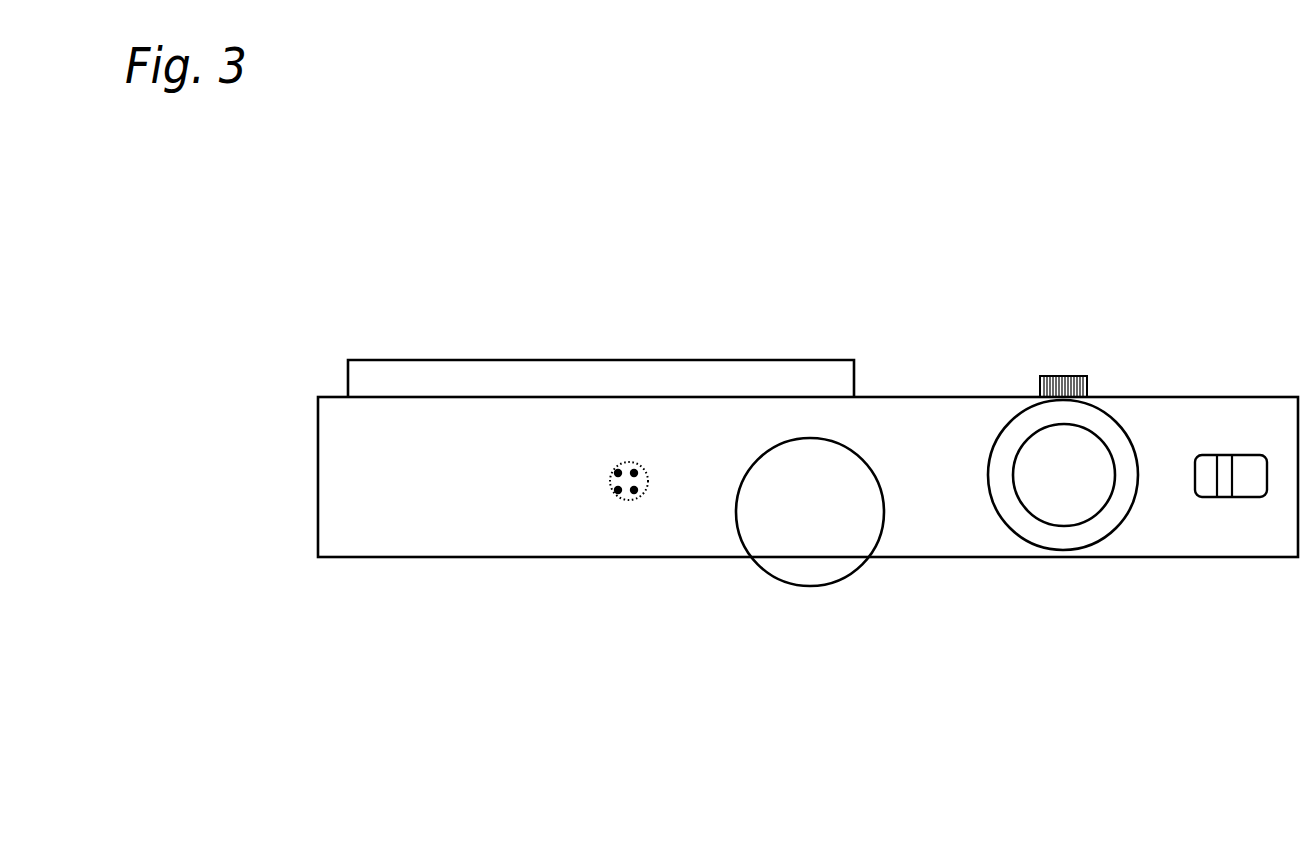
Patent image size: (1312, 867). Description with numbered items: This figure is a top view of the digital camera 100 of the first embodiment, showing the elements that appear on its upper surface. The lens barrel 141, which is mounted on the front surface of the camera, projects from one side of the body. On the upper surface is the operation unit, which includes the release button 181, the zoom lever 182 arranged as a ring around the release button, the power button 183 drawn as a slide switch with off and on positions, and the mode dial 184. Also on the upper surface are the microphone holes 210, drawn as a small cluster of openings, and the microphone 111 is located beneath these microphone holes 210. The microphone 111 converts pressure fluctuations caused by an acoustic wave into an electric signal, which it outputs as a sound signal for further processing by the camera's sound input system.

The digital camera 100 is at (696, 201).
The lens barrel 141 is at (398, 380).
The microphone holes 210 is at (617, 477).
The microphone 111 is at (628, 500).
The mode dial 184 is at (848, 578).
The zoom lever 182 is at (1090, 533).
The release button 181 is at (1070, 482).
The power button 183 is at (1207, 475).